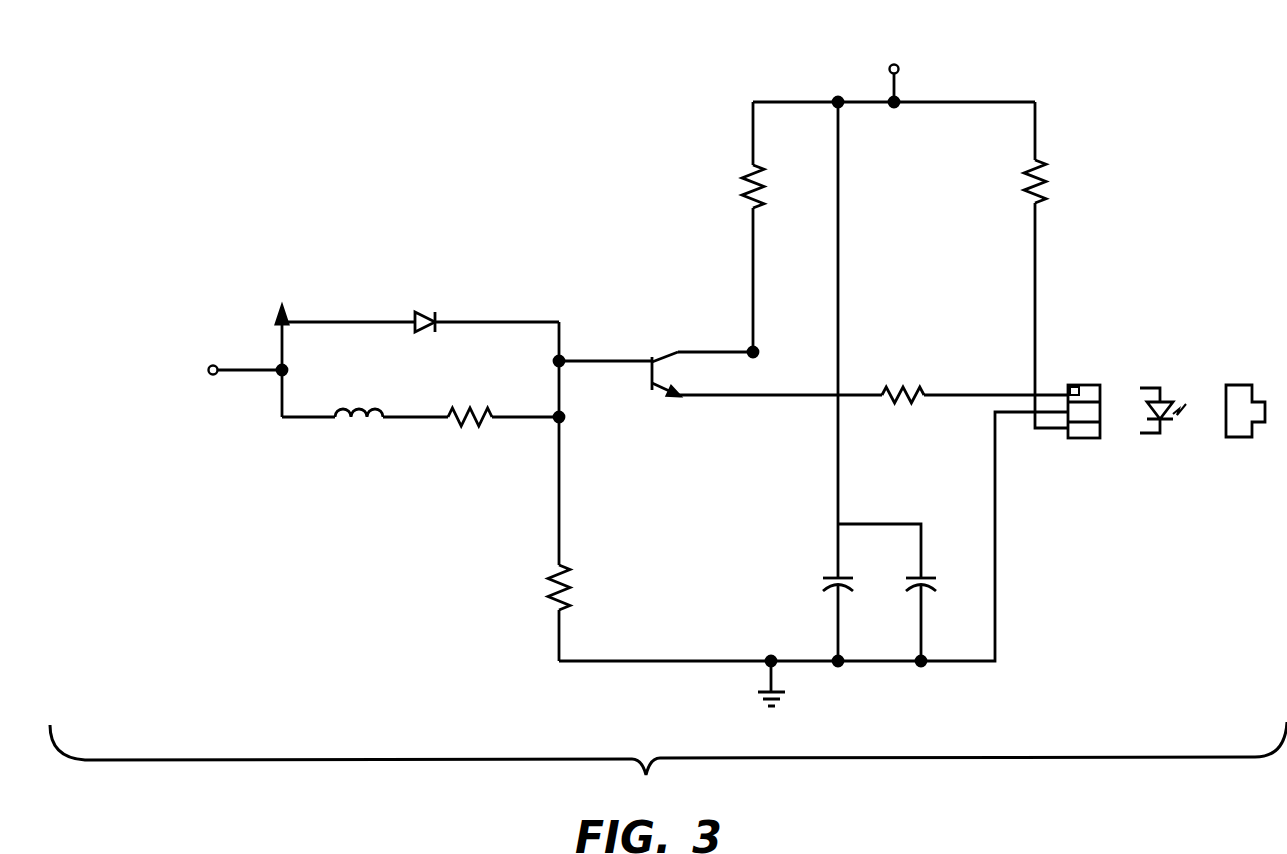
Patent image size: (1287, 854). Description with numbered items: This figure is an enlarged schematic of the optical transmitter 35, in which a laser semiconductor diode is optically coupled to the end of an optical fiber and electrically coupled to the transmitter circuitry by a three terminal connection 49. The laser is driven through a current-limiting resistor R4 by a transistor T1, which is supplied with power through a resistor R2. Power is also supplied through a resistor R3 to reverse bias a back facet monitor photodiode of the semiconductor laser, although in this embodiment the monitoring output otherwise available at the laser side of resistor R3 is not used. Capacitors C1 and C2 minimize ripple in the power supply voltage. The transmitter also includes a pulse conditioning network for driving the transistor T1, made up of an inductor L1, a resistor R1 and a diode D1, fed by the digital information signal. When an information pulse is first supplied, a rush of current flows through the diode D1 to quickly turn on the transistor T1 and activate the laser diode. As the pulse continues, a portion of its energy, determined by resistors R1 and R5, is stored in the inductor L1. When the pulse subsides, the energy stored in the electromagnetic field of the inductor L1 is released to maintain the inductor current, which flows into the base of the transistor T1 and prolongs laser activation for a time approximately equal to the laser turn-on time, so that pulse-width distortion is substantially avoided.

The laser driver circuit 35 is at (653, 369).
The three terminal connection 49 is at (1090, 385).
The resistor R1 is at (470, 436).
The resistor R2 is at (731, 186).
The resistor R3 is at (1055, 181).
The current-limiting resistor R4 is at (903, 380).
The resistor R5 is at (537, 587).
The capacitor C1 is at (817, 590).
The capacitor C2 is at (902, 590).
The inductor L1 is at (359, 437).
The diode D1 is at (429, 307).
The transistor T1 is at (648, 364).